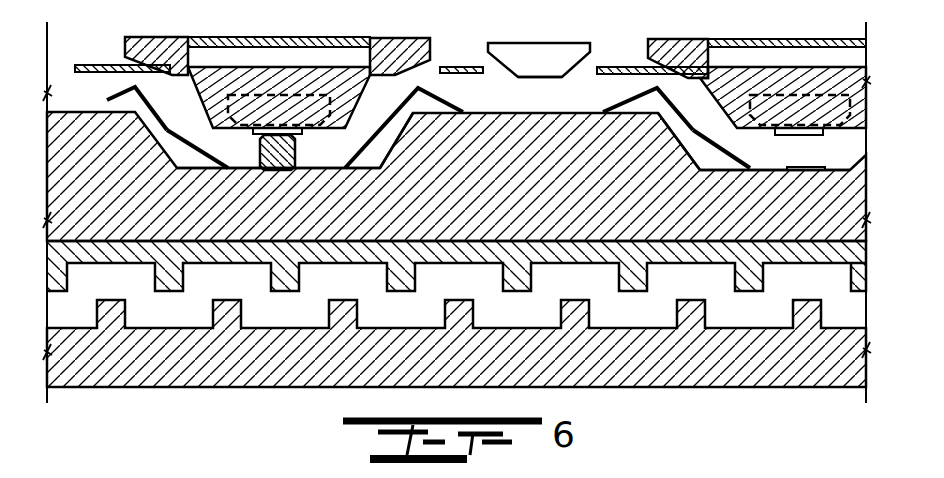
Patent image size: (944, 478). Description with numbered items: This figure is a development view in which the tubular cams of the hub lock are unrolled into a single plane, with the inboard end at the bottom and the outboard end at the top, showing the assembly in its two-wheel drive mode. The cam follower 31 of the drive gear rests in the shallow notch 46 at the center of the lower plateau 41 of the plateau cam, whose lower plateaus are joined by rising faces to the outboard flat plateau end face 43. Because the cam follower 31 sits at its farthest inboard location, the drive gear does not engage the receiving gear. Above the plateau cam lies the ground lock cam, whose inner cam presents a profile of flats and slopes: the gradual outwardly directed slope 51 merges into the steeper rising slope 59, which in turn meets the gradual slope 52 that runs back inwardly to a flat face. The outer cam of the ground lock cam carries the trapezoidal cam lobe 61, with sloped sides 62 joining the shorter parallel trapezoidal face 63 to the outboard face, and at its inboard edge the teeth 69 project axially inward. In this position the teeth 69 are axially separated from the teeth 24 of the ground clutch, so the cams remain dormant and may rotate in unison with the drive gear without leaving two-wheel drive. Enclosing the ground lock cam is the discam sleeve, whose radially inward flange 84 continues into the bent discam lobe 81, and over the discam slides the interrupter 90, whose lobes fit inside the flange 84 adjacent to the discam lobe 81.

The teeth 24 is at (328, 312).
The cam follower 31 is at (296, 147).
The lower plateau 41 is at (245, 168).
The outboard flat plateau end face 43 is at (485, 112).
The shallow notch 46 is at (790, 170).
The gradual outwardly directed slope 51 is at (352, 157).
The gradual slope 52 is at (107, 100).
The steeper rising slope 59 is at (405, 100).
The cam lobe 61 is at (537, 53).
The sloped side 62 is at (583, 64).
The shorter parallel trapezoidal face 63 is at (542, 77).
The teeth 69 is at (387, 273).
The discam lobe 81 is at (286, 72).
The flange 84 is at (441, 67).
The interrupter 90 is at (166, 42).